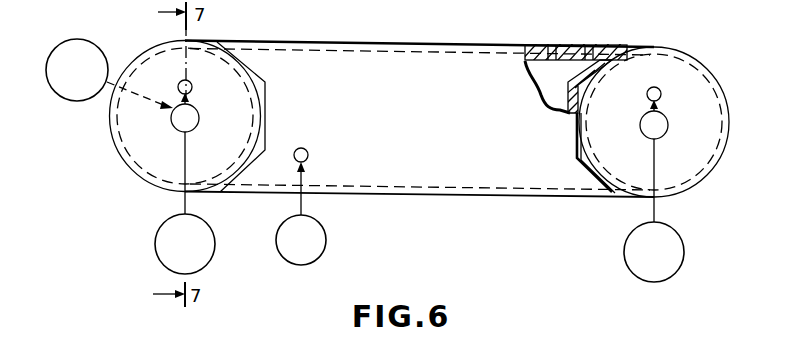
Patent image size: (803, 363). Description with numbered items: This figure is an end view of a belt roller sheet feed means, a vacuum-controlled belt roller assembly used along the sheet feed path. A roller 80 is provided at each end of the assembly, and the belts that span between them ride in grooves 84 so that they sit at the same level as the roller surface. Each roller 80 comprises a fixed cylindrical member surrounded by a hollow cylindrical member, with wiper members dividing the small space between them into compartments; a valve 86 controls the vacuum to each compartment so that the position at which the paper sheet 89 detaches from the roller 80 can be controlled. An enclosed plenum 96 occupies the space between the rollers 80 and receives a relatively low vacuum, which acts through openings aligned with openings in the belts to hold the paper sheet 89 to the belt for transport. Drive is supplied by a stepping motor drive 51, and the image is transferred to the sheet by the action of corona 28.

The roller 80 is at (114, 169).
The stepping motor drive 51 is at (103, 46).
The valve 86 is at (157, 244).
The paper sheet 89 is at (420, 42).
The enclosed plenum 96 is at (462, 180).
The corona 28 is at (572, 45).
The grooves 84 is at (606, 46).